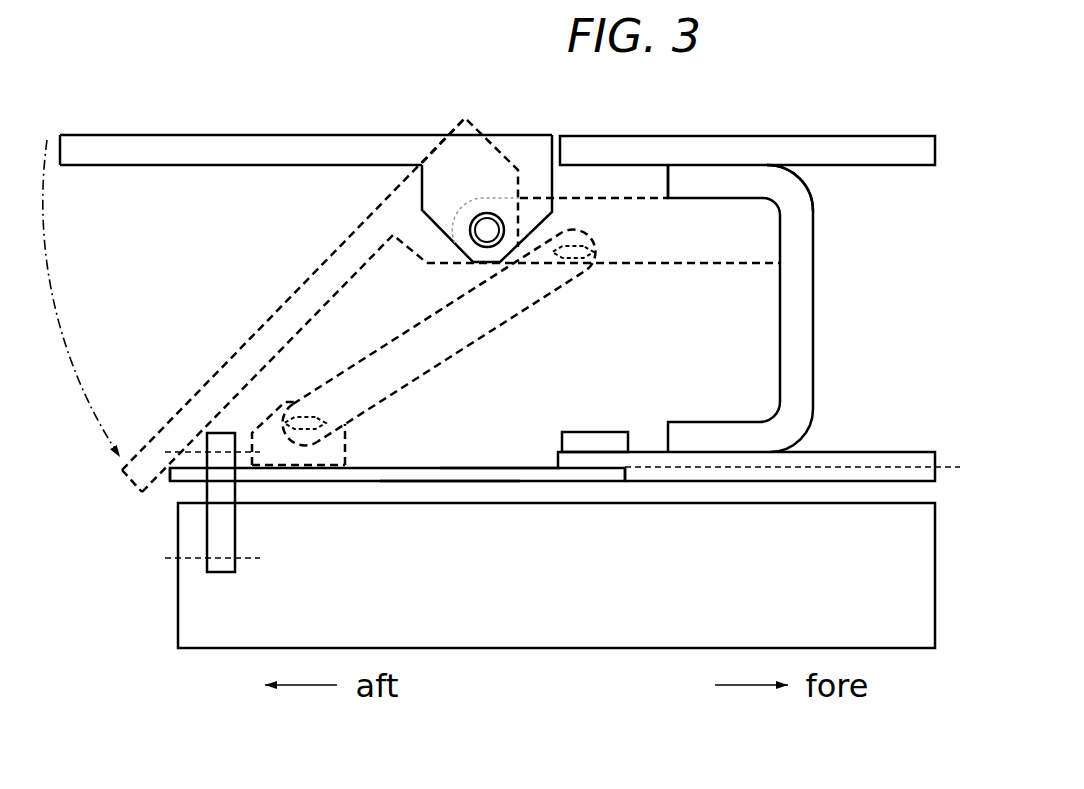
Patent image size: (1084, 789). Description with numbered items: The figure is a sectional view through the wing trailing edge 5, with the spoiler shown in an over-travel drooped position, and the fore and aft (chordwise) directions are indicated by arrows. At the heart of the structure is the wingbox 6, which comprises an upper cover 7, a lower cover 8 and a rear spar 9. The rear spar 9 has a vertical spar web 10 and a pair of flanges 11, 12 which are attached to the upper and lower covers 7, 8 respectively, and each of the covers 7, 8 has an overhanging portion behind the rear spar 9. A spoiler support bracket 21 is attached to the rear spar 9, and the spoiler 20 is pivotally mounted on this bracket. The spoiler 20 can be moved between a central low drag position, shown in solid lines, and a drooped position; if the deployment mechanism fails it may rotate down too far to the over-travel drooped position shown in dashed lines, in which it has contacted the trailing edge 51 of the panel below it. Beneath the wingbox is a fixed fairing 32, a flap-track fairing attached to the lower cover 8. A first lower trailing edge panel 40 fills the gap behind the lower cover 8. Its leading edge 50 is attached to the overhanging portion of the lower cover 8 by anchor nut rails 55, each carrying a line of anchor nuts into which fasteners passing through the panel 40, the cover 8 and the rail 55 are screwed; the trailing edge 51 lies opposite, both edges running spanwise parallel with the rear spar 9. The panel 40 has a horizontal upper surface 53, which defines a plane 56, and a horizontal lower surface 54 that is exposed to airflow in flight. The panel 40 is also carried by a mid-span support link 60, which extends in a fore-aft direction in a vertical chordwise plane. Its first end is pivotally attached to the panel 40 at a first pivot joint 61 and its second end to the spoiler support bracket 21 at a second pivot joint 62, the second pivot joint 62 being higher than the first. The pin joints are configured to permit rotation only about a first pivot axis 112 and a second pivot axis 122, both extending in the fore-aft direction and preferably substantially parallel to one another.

The trailing edge 5 is at (403, 90).
The wingbox 6 is at (808, 102).
The upper cover 7 is at (817, 145).
The lower cover 8 is at (833, 473).
The rear spar 9 is at (787, 280).
The spar web 10 is at (788, 357).
The flange 11 is at (695, 420).
The flange 12 is at (722, 182).
The spoiler 20 is at (235, 150).
The spoiler support bracket 21 is at (683, 250).
The fixed fairing 32 is at (628, 613).
The first lower trailing edge panel 40 is at (450, 478).
The leading edge 50 is at (625, 473).
The trailing edge 51 is at (170, 468).
The upper surface 53 is at (497, 468).
The lower surface 54 is at (388, 485).
The anchor nut rail 55 is at (585, 433).
The plane 56 is at (947, 467).
The mid-span support link 60 is at (402, 339).
The first pivot joint 61 is at (257, 412).
The second pivot joint 62 is at (595, 272).
The first pivot axis 112 is at (245, 453).
The second pivot axis 122 is at (172, 560).